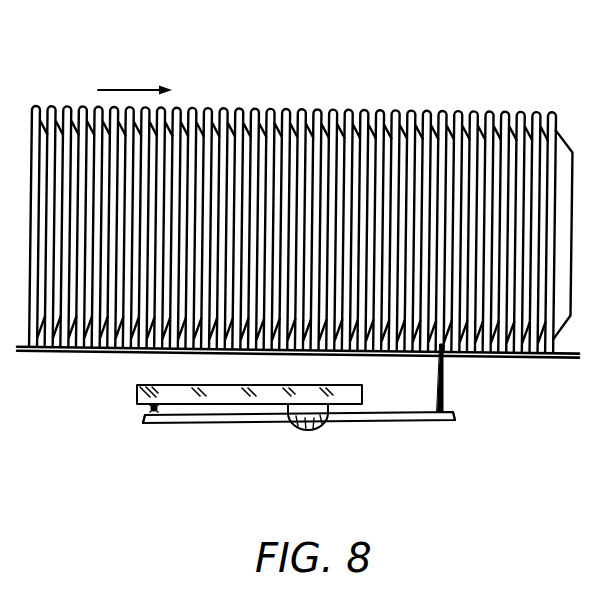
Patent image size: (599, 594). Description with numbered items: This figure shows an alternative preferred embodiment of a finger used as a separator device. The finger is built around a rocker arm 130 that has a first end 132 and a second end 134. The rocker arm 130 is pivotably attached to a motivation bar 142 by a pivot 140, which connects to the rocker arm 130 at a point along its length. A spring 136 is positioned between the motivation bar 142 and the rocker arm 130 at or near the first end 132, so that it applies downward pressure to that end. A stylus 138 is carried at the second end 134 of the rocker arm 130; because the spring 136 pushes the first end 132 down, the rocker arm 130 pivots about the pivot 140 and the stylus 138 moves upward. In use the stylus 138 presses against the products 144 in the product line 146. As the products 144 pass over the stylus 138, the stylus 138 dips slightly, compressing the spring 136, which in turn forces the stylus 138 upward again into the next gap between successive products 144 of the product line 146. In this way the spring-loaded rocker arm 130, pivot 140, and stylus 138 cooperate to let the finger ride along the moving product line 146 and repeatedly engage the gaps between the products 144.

The rocker arm 130 is at (294, 446).
The first end 132 is at (145, 419).
The second end 134 is at (455, 419).
The spring 136 is at (150, 407).
The stylus 138 is at (443, 377).
The pivot 140 is at (308, 424).
The motivation bar 142 is at (137, 394).
The products 144 is at (434, 110).
The product line 146 is at (299, 199).